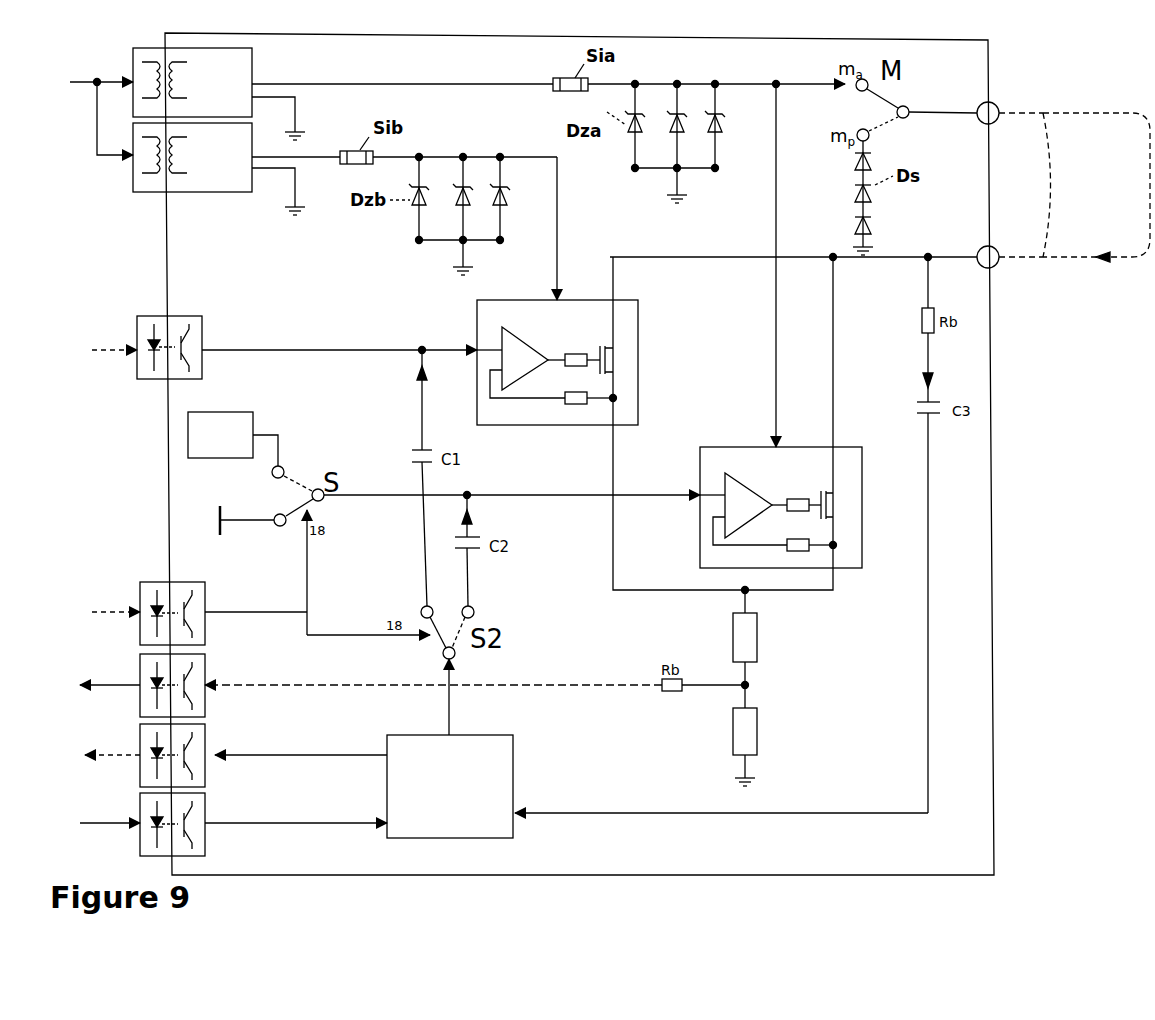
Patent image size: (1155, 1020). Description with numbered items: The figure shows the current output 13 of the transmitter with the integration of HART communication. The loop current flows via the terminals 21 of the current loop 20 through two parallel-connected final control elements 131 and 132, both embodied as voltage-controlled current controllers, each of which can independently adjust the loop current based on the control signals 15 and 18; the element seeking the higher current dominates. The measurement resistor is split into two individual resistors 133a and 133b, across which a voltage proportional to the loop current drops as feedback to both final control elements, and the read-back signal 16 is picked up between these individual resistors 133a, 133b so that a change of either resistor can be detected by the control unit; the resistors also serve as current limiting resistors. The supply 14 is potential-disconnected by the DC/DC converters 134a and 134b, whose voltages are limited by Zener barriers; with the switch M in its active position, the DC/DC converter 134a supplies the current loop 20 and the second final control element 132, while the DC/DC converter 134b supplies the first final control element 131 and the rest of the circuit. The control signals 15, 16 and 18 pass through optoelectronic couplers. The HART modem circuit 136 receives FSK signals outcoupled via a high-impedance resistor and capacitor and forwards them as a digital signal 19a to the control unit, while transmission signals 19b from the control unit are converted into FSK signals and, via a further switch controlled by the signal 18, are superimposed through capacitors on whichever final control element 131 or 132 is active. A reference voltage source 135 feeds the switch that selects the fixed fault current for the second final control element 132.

The current output 13 is at (995, 462).
The supply signal 14 is at (101, 105).
The analog specified voltage 15 is at (281, 347).
The read-back signal 16 is at (142, 685).
The control signal 18 is at (199, 613).
The digital signal 19a is at (236, 755).
The transmission signals 19b is at (233, 824).
The current loop 20 is at (1074, 187).
The terminals 21 is at (1002, 185).
The first final control element 131 is at (641, 360).
The second final control element 132 is at (762, 448).
The individual resistor 133a is at (748, 640).
The individual resistor 133b is at (748, 735).
The DC/DC converter 134a is at (343, 94).
The DC/DC converter 134b is at (236, 169).
The reference voltage source 135 is at (233, 439).
The HART modem circuit 136 is at (450, 748).